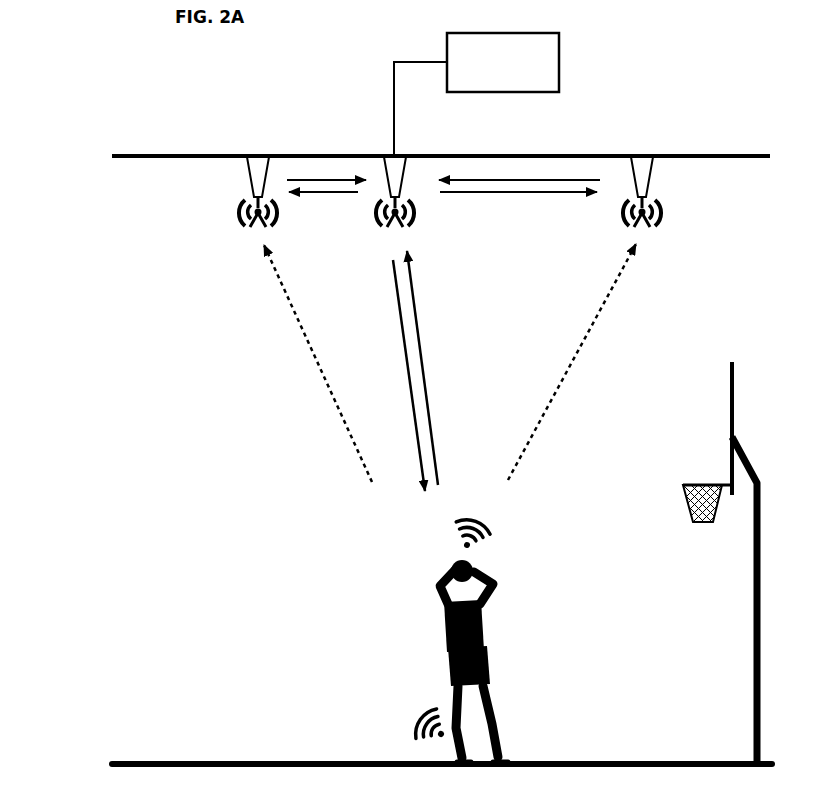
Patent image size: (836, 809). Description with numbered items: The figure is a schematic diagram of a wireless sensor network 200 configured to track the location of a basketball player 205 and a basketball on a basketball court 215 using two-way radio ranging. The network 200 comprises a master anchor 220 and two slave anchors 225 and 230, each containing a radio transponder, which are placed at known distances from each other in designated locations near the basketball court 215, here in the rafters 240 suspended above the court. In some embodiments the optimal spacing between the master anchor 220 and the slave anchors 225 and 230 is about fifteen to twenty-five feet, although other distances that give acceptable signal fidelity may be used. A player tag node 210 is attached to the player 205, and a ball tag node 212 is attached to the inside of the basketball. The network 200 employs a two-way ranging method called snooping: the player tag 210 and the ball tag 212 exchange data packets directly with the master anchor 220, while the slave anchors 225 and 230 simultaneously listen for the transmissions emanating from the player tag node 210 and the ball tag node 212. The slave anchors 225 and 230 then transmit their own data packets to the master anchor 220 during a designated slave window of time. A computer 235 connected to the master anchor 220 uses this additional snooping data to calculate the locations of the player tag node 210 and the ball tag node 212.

The wireless sensor network 200 is at (66, 156).
The basketball player 205 is at (486, 636).
The player tag node 210 is at (432, 695).
The ball tag node 212 is at (478, 565).
The basketball court 215 is at (195, 762).
The master anchor 220 is at (392, 167).
The slave anchor 225 is at (262, 165).
The slave anchor 230 is at (640, 167).
The computer 235 is at (476, 94).
The rafters 240 is at (695, 156).